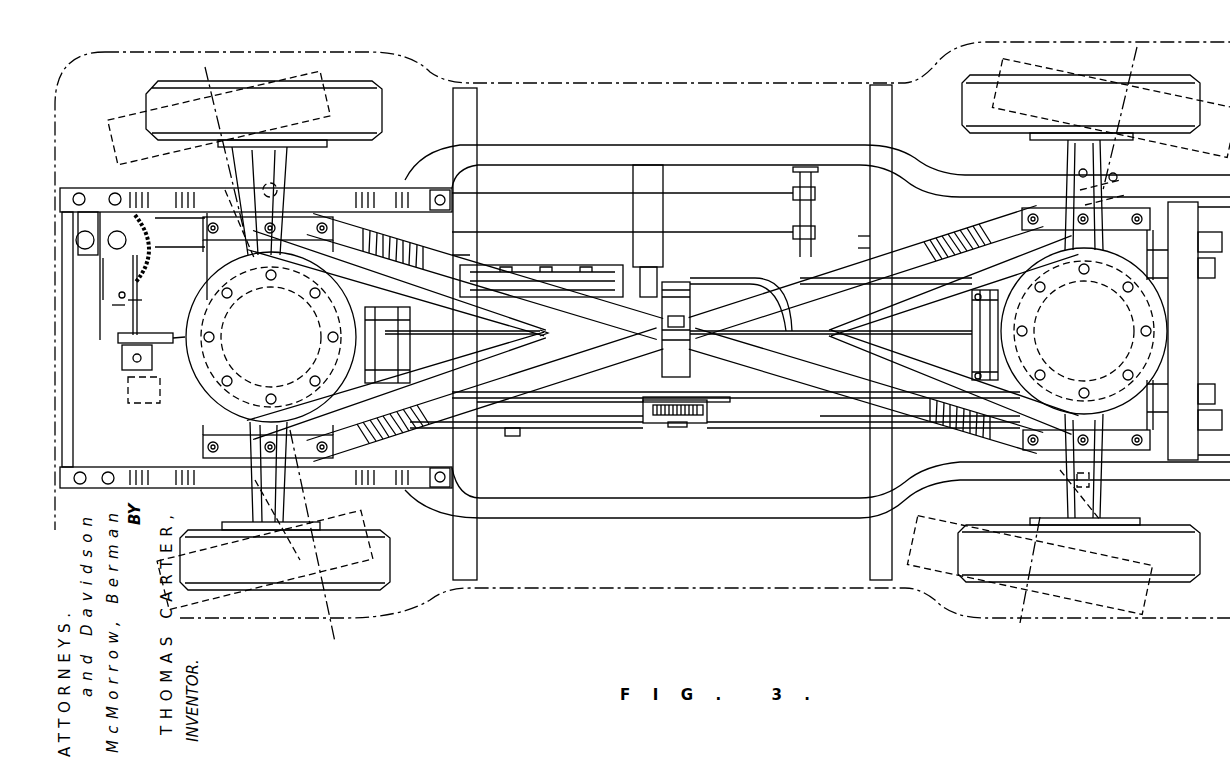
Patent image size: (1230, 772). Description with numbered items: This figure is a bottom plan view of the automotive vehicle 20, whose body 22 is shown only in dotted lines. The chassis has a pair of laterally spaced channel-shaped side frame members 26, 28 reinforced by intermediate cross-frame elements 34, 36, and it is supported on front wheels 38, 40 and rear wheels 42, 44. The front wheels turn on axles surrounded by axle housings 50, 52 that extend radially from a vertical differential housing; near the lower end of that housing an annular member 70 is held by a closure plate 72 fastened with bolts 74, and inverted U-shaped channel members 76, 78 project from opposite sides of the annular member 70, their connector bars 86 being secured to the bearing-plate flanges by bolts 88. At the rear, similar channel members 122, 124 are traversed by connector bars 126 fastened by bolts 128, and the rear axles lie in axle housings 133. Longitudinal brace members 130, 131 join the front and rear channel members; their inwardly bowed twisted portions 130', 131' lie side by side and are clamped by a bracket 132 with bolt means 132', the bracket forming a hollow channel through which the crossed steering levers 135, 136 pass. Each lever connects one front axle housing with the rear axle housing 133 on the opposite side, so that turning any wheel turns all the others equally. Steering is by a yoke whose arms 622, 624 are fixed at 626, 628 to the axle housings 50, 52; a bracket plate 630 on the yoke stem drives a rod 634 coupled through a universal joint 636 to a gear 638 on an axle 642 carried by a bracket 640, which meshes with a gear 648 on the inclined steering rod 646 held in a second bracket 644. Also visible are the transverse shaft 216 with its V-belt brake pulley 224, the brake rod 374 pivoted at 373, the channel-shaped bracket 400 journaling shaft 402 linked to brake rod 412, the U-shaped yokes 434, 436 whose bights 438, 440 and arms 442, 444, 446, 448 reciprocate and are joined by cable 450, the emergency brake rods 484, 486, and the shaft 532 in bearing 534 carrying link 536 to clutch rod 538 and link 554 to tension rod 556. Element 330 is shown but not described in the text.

The automotive vehicle 20 is at (691, 69).
The body 22 is at (856, 77).
The side frame member 26 is at (705, 500).
The side frame member 28 is at (746, 150).
The intermediate cross-frame element 34 is at (470, 108).
The intermediate cross-frame element 36 is at (880, 112).
The front wheel 38 is at (390, 578).
The front wheel 40 is at (380, 108).
The rear wheel 42 is at (1200, 560).
The rear wheel 44 is at (963, 107).
The axle housing 50 is at (292, 162).
The axle housing 52 is at (247, 530).
The annular member 70 is at (205, 420).
The closure plate 72 is at (215, 400).
The bolts 74 is at (230, 382).
The U-shaped channel member 76 is at (290, 197).
The U-shaped channel member 78 is at (247, 507).
The connector bars 86 is at (232, 458).
The bolts 88 is at (318, 450).
The U-shaped channel member 122 is at (1100, 190).
The U-shaped channel member 124 is at (1100, 470).
The connector bars 126 is at (1120, 442).
The bolts 128 is at (1150, 432).
The brace member 130 is at (396, 324).
The twisted portion 130' is at (831, 289).
The brace member 131 is at (675, 334).
The twisted portion 131' is at (908, 335).
The bracket 132 is at (699, 337).
The bolt means 132' is at (675, 334).
The axle housing 133 is at (1100, 507).
The steering lever 135 is at (858, 240).
The steering lever 136 is at (840, 428).
The shaft 216 is at (665, 428).
The V-belt brake pulley 224 is at (700, 428).
The slide bar 330 is at (548, 262).
The pivotal connection 373 is at (380, 440).
The brake rod 374 is at (592, 420).
The channel-shaped bracket 400 is at (665, 220).
The shaft 402 is at (664, 258).
The brake rod 412 is at (560, 265).
The U-shaped yoke 434 is at (398, 365).
The U-shaped yoke 436 is at (972, 358).
The bight 438 is at (398, 330).
The bight 440 is at (972, 343).
The arm 442 is at (440, 370).
The arm 444 is at (398, 318).
The arm 446 is at (975, 378).
The arm 448 is at (972, 314).
The cable 450 is at (398, 343).
The brake rod 484 is at (505, 438).
The brake rod 486 is at (775, 428).
The shaft 532 is at (860, 245).
The bearing 534 is at (815, 172).
The link 536 is at (795, 230).
The clutch-operating rod 538 is at (612, 255).
The link 554 is at (795, 192).
The tension-applying rod 556 is at (620, 232).
The arm 622 is at (207, 255).
The arm 624 is at (205, 450).
The fixed connection 626 is at (219, 186).
The fixed connection 628 is at (246, 492).
The bracket plate 630 is at (120, 338).
The rod 634 is at (140, 306).
The universal joint 636 is at (143, 275).
The gear 638 is at (118, 307).
The bracket 640 is at (120, 295).
The axle 642 is at (108, 272).
The bracket 644 is at (87, 215).
The steering rod 646 is at (165, 240).
The gear 648 is at (110, 210).